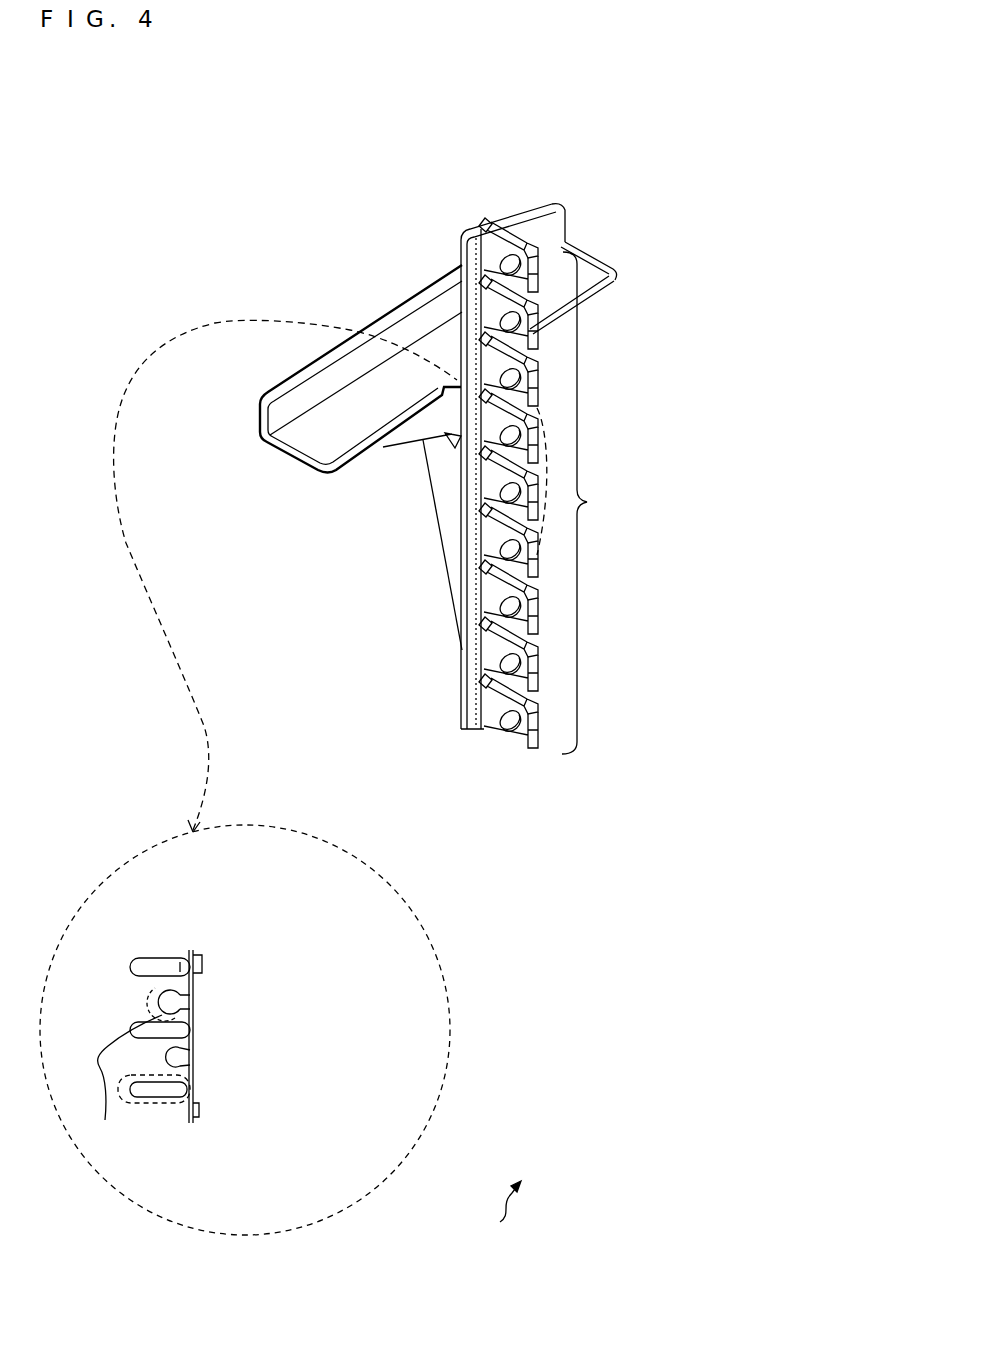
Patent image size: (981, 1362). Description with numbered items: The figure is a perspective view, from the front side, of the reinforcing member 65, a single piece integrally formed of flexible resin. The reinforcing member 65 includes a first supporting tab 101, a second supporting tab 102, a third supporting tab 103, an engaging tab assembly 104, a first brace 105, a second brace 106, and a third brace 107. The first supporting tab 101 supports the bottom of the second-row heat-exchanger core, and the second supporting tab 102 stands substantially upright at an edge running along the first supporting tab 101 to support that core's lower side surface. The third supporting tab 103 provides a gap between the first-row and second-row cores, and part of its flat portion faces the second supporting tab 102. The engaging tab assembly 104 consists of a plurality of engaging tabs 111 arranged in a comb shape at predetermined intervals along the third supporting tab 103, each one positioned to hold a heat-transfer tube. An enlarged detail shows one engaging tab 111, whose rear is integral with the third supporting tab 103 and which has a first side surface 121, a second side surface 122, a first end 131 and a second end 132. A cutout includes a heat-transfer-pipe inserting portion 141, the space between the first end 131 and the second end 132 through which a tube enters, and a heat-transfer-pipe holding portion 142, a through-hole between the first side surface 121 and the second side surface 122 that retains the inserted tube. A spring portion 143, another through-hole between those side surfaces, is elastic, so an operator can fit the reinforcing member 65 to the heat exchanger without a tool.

The reinforcing member 65 is at (492, 1213).
The first supporting tab 101 is at (587, 267).
The second supporting tab 102 is at (552, 228).
The third supporting tab 103 is at (460, 235).
The engaging tab assembly 104 is at (612, 503).
The first brace 105 is at (452, 536).
The second brace 106 is at (395, 442).
The third brace 107 is at (540, 340).
The engaging tab 111 is at (197, 1002).
The first side surface 121 is at (497, 643).
The second side surface 122 is at (527, 650).
The first end 131 is at (194, 1069).
The second end 132 is at (200, 1105).
The heat-transfer-pipe inserting portion 141 is at (197, 956).
The heat-transfer-pipe holding portion 142 is at (194, 1088).
The spring portion 143 is at (127, 1084).